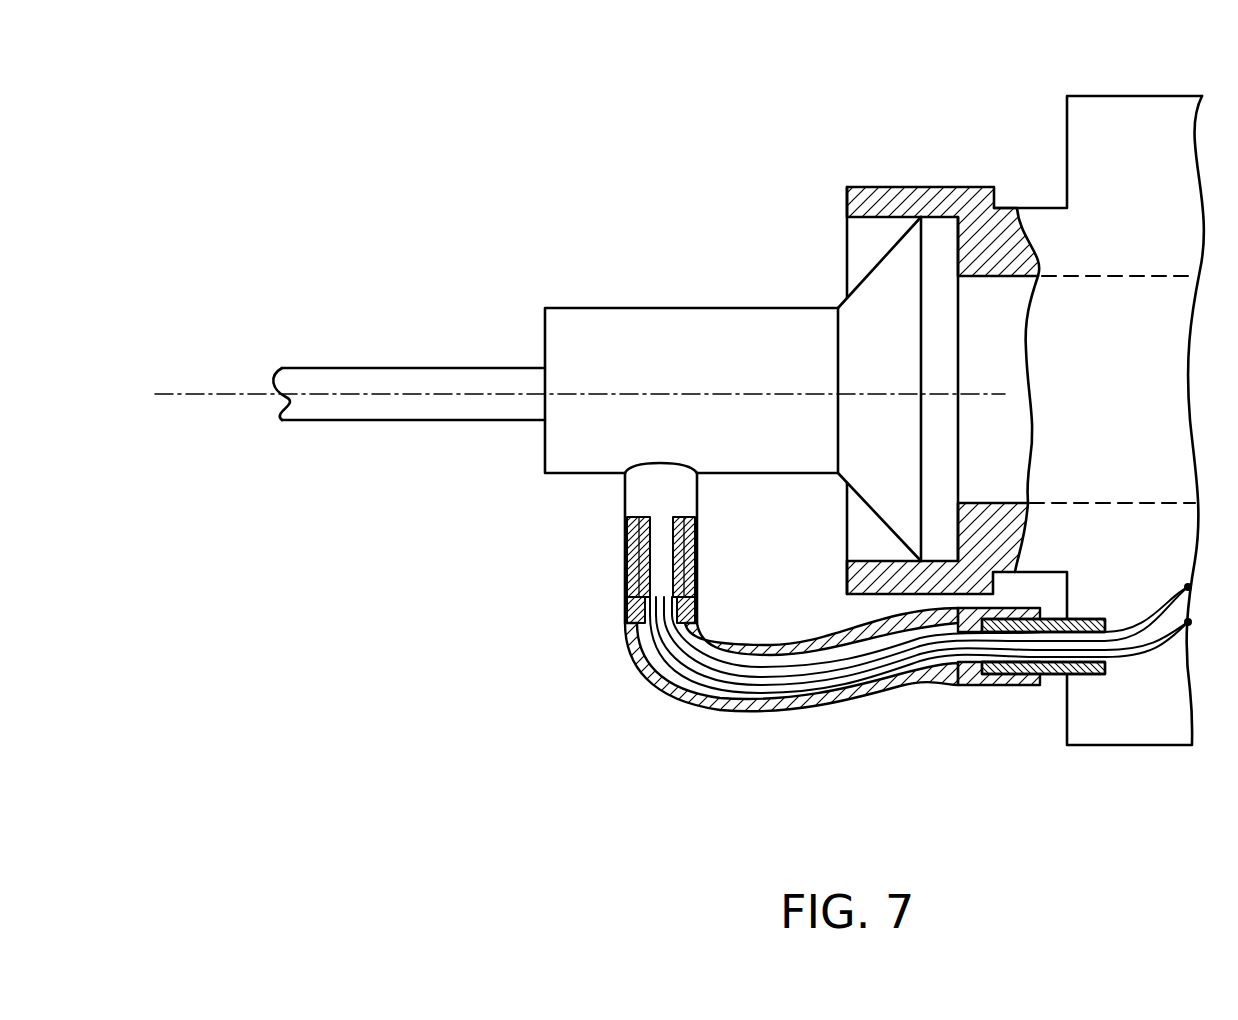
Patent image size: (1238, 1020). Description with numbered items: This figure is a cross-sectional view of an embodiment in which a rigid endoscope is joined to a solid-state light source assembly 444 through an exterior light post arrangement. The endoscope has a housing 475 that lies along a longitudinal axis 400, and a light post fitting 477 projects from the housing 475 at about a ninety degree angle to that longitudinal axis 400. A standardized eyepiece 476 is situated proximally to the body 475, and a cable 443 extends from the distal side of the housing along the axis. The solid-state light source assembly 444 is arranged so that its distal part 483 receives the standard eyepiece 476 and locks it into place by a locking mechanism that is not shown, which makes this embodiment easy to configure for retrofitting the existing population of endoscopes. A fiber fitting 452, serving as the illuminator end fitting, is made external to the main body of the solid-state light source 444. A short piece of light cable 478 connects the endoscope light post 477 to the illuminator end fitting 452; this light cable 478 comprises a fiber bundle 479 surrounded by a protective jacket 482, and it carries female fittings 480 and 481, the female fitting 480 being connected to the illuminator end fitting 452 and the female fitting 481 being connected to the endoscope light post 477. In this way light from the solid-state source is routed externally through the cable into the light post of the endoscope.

The longitudinal axis 400 is at (203, 397).
The cable 443 is at (385, 422).
The solid-state light source assembly 444 is at (1118, 92).
The fiber fitting 452 is at (1055, 676).
The housing 475 is at (590, 306).
The standardized eyepiece 476 is at (870, 277).
The light post fitting 477 is at (623, 495).
The light cable 478 is at (894, 722).
The fiber bundle 479 is at (798, 682).
The female fitting 480 is at (978, 686).
The female fitting 481 is at (623, 562).
The protective jacket 482 is at (645, 688).
The distal part 483 is at (888, 185).